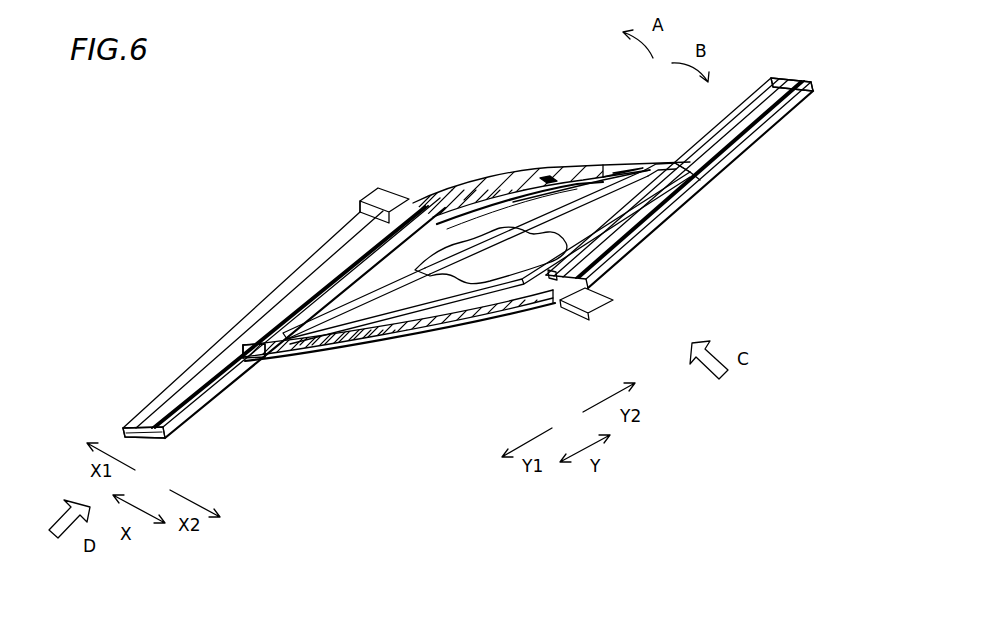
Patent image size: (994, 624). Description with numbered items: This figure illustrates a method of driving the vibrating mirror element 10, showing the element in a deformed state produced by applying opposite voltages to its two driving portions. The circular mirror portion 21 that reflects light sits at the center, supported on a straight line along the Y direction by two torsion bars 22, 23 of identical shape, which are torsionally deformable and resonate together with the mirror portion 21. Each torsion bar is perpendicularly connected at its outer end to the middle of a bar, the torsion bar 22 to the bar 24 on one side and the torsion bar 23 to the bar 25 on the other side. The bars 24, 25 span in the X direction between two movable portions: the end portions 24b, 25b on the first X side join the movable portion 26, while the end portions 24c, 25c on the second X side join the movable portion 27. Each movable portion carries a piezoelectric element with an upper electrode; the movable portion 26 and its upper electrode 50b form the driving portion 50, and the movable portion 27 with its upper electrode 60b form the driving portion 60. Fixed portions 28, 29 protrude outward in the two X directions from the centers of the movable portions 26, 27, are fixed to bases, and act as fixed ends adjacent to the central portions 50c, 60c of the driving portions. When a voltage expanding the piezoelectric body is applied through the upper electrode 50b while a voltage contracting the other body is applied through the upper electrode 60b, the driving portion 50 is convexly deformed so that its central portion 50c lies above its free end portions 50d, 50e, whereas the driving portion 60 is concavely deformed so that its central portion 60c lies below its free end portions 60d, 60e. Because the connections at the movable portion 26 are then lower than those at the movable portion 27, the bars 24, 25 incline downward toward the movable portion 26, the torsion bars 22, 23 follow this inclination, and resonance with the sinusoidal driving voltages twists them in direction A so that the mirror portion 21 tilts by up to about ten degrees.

The vibrating mirror element 10 is at (719, 49).
The mirror portion 21 is at (493, 243).
The torsion bar 22 is at (410, 273).
The torsion bar 23 is at (578, 204).
The bar 24 is at (290, 328).
The end portion of the bar 24b is at (287, 332).
The end portion of the bar 24c is at (350, 348).
The bar 25 is at (663, 163).
The end portion of the bar 25b is at (545, 175).
The end portion of the bar 25c is at (686, 178).
The movable portion 26 is at (193, 414).
The movable portion 27 is at (463, 332).
The fixed portion 28 is at (377, 192).
The fixed portion 29 is at (600, 287).
The driving portion 50 is at (472, 167).
The upper electrode 50b is at (430, 198).
The central portion of the driving portion 50c is at (360, 206).
The end portion of the driving portion 50d is at (124, 431).
The end portion of the driving portion 50e is at (602, 130).
The driving portion 60 is at (770, 152).
The upper electrode 60b is at (690, 187).
The central portion of the driving portion 60c is at (553, 276).
The end portion of the driving portion 60d is at (257, 358).
The end portion of the driving portion 60e is at (793, 77).